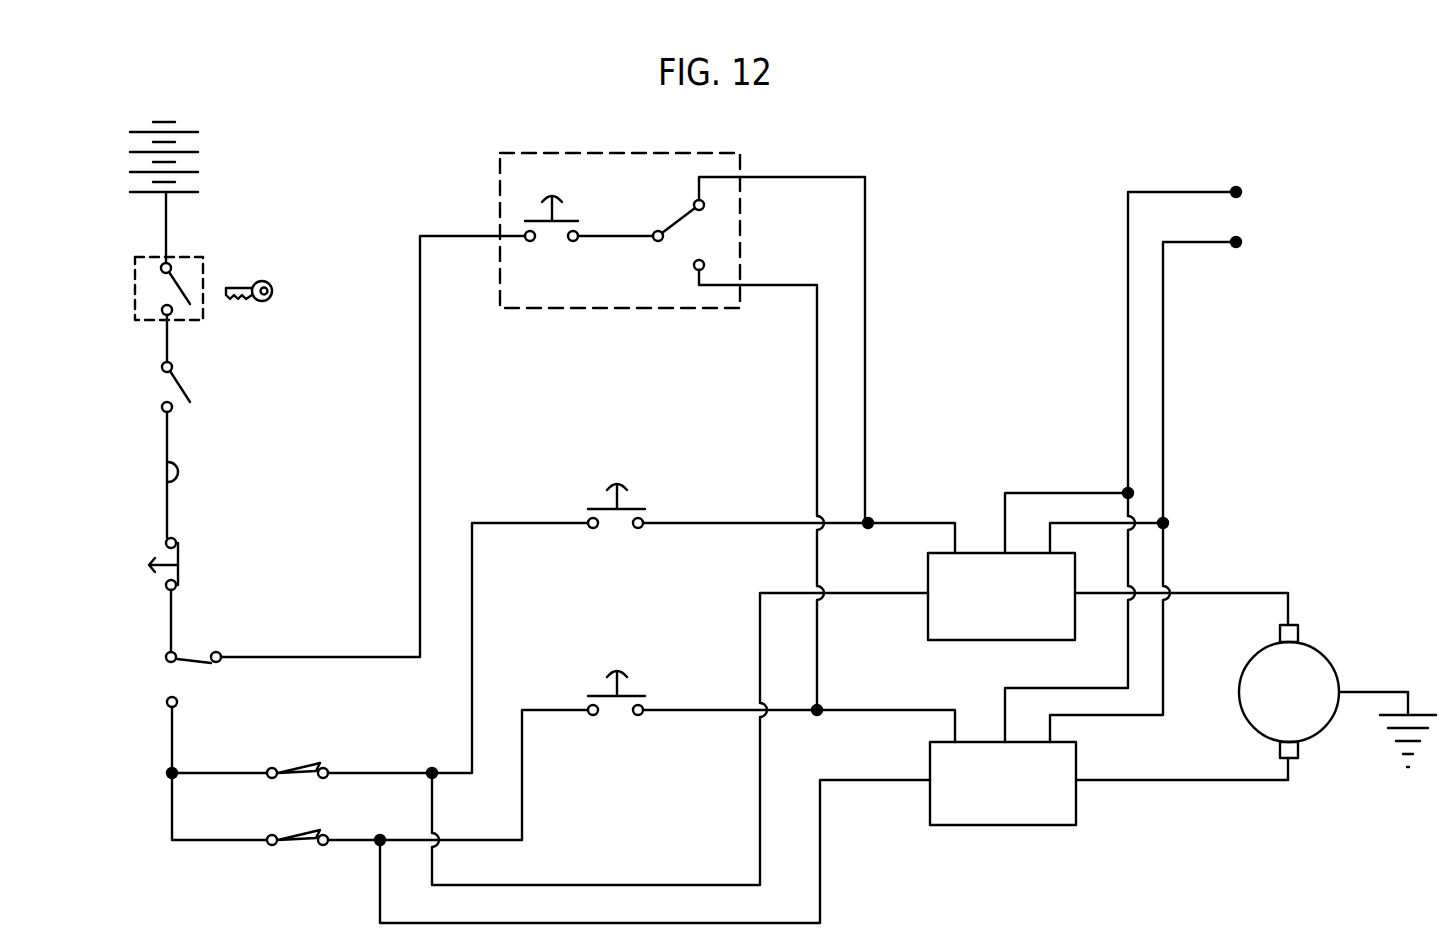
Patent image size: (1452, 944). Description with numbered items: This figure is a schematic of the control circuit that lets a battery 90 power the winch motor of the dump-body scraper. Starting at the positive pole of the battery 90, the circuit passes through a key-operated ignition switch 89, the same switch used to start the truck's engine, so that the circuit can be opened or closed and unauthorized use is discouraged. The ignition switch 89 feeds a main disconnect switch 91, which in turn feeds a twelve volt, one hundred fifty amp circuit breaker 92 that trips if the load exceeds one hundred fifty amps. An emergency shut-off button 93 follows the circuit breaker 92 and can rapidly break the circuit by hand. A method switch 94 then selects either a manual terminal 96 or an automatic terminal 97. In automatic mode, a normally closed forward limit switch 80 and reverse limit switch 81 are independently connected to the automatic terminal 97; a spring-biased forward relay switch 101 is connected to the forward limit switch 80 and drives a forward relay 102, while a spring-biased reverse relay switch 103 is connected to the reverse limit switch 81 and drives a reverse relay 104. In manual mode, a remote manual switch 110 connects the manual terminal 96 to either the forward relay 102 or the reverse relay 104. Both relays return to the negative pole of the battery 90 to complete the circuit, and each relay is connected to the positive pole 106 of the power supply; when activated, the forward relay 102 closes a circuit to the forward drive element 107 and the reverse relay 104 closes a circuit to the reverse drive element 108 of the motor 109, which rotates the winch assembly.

The forward limit switch 80 is at (300, 765).
The reverse limit switch 81 is at (300, 848).
The ignition switch 89 is at (134, 288).
The battery 90 is at (118, 134).
The main disconnect switch 91 is at (165, 382).
The circuit breaker 92 is at (165, 472).
The emergency shut-off button 93 is at (140, 565).
The method switch 94 is at (160, 672).
The manual terminal 96 is at (217, 652).
The automatic terminal 97 is at (167, 702).
The forward relay switch 101 is at (593, 510).
The forward relay 102 is at (976, 535).
The reverse relay switch 103 is at (596, 700).
The reverse relay 104 is at (974, 845).
The positive pole of the power supply 106 is at (1228, 180).
The forward drive element 107 is at (1298, 634).
The reverse drive element 108 is at (1299, 756).
The motor 109 is at (1344, 646).
The remote manual switch 110 is at (604, 333).